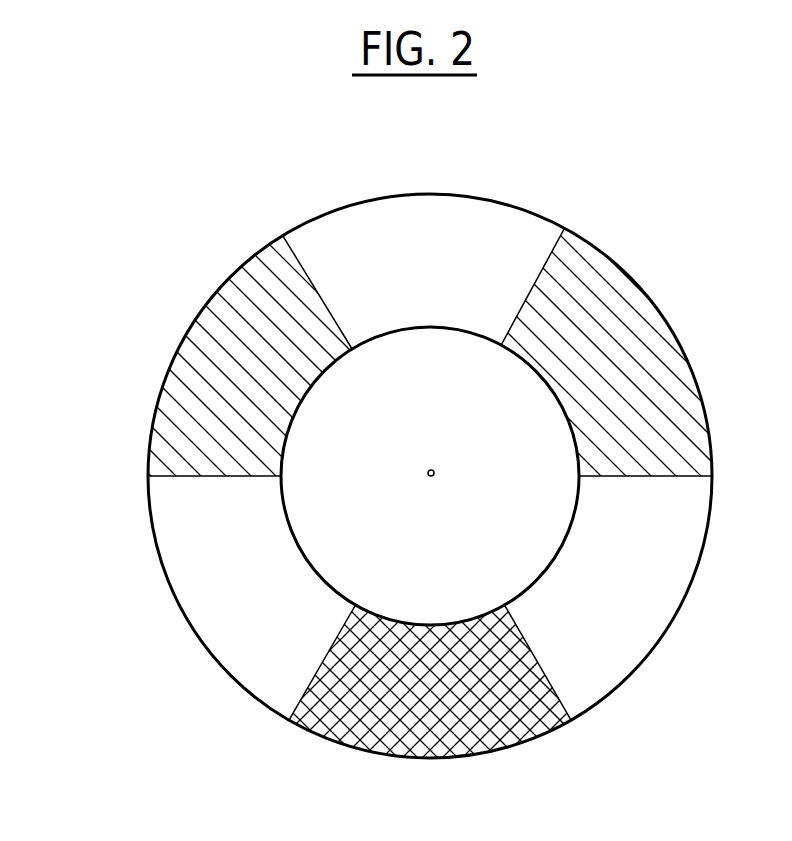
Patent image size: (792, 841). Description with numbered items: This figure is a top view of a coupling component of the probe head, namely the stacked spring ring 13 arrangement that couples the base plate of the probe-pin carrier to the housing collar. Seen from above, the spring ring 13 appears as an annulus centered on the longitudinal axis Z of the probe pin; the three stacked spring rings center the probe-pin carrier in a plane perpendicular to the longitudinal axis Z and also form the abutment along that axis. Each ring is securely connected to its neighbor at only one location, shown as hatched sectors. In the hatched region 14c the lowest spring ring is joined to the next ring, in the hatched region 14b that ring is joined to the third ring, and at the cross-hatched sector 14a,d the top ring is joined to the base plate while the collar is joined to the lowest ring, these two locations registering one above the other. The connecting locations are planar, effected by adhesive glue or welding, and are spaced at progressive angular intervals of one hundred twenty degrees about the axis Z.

The spring ring 13 is at (668, 288).
The hatched connection region 14b is at (702, 444).
The hatched connection region 14c is at (197, 338).
The connection locations 14a,d is at (522, 733).
The longitudinal axis Z is at (434, 473).